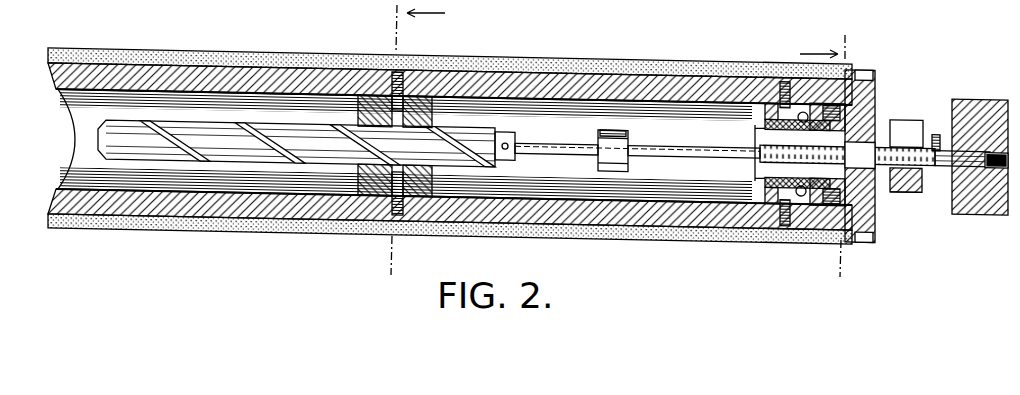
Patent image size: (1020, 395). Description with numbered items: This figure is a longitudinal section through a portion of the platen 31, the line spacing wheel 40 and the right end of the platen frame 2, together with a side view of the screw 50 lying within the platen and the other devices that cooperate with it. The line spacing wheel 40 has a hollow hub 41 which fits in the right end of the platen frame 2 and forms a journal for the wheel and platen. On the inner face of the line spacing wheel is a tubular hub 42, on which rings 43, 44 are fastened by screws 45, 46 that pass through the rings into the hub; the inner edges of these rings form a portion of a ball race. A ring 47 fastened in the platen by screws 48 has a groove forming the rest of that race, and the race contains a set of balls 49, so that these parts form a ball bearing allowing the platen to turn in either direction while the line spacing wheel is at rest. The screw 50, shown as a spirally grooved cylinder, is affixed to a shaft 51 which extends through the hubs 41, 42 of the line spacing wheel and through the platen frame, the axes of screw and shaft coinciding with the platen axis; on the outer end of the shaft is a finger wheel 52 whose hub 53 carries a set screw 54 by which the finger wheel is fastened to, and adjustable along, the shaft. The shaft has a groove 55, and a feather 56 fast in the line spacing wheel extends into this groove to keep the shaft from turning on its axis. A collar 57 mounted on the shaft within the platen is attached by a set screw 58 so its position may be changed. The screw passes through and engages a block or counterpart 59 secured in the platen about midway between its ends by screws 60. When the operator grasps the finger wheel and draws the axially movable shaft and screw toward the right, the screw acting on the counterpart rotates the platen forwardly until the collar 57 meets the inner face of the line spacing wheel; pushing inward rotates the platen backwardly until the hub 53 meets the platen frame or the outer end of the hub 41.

The platen frame 2 is at (893, 193).
The platen 31 is at (532, 64).
The line spacing wheel 40 is at (876, 105).
The hollow hub 41 is at (887, 155).
The tubular hub 42 is at (755, 138).
The ring 43 is at (876, 117).
The ring 44 is at (771, 105).
The screw 45 is at (874, 100).
The screw 46 is at (790, 130).
The ring 47 is at (768, 203).
The screws 48 is at (786, 80).
The balls 49 is at (836, 100).
The screw 50 is at (302, 131).
The shaft 51 is at (533, 144).
The finger wheel 52 is at (971, 101).
The hub 53 is at (922, 180).
The set screw 54 is at (936, 134).
The groove 55 is at (697, 147).
The feather 56 is at (826, 147).
The collar 57 is at (629, 131).
The set screw 58 is at (613, 129).
The block or counterpart 59 is at (429, 100).
The screws 60 is at (396, 73).